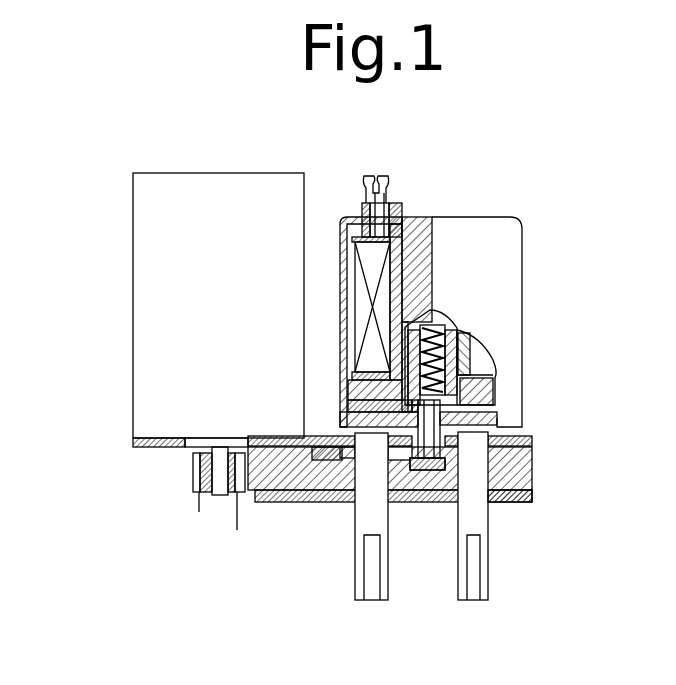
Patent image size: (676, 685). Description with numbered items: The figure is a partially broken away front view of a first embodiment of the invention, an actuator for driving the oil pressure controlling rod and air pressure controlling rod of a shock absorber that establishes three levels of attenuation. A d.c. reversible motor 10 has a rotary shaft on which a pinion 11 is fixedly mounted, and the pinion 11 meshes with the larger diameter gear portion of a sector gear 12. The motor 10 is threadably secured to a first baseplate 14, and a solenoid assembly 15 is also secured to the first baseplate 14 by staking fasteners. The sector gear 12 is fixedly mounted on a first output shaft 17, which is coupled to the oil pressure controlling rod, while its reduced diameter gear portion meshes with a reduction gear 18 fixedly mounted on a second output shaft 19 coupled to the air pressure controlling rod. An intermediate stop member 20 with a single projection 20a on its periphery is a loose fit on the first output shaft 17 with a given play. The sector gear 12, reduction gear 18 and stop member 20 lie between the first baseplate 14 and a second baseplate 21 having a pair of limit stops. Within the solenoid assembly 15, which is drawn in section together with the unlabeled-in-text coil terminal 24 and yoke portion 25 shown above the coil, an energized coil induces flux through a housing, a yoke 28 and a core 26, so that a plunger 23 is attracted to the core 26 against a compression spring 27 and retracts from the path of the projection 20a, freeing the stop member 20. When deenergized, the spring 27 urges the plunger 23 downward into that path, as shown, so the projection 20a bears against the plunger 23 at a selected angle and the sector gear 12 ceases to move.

The d.c. reversible motor 10 is at (143, 218).
The pinion 11 is at (192, 490).
The sector gear 12 is at (226, 526).
The first baseplate 14 is at (133, 443).
The solenoid assembly 15 is at (515, 218).
The first output shaft 17 is at (358, 600).
The reduction gear 18 is at (520, 503).
The second output shaft 19 is at (461, 600).
The intermediate stop member 20 is at (330, 492).
The projection 20a is at (480, 448).
The second baseplate 21 is at (284, 500).
The plunger 23 is at (480, 420).
The coil terminal 24 is at (390, 215).
The yoke 25 is at (410, 222).
The core 26 is at (432, 262).
The compression spring 27 is at (440, 310).
The yoke 28 is at (475, 372).